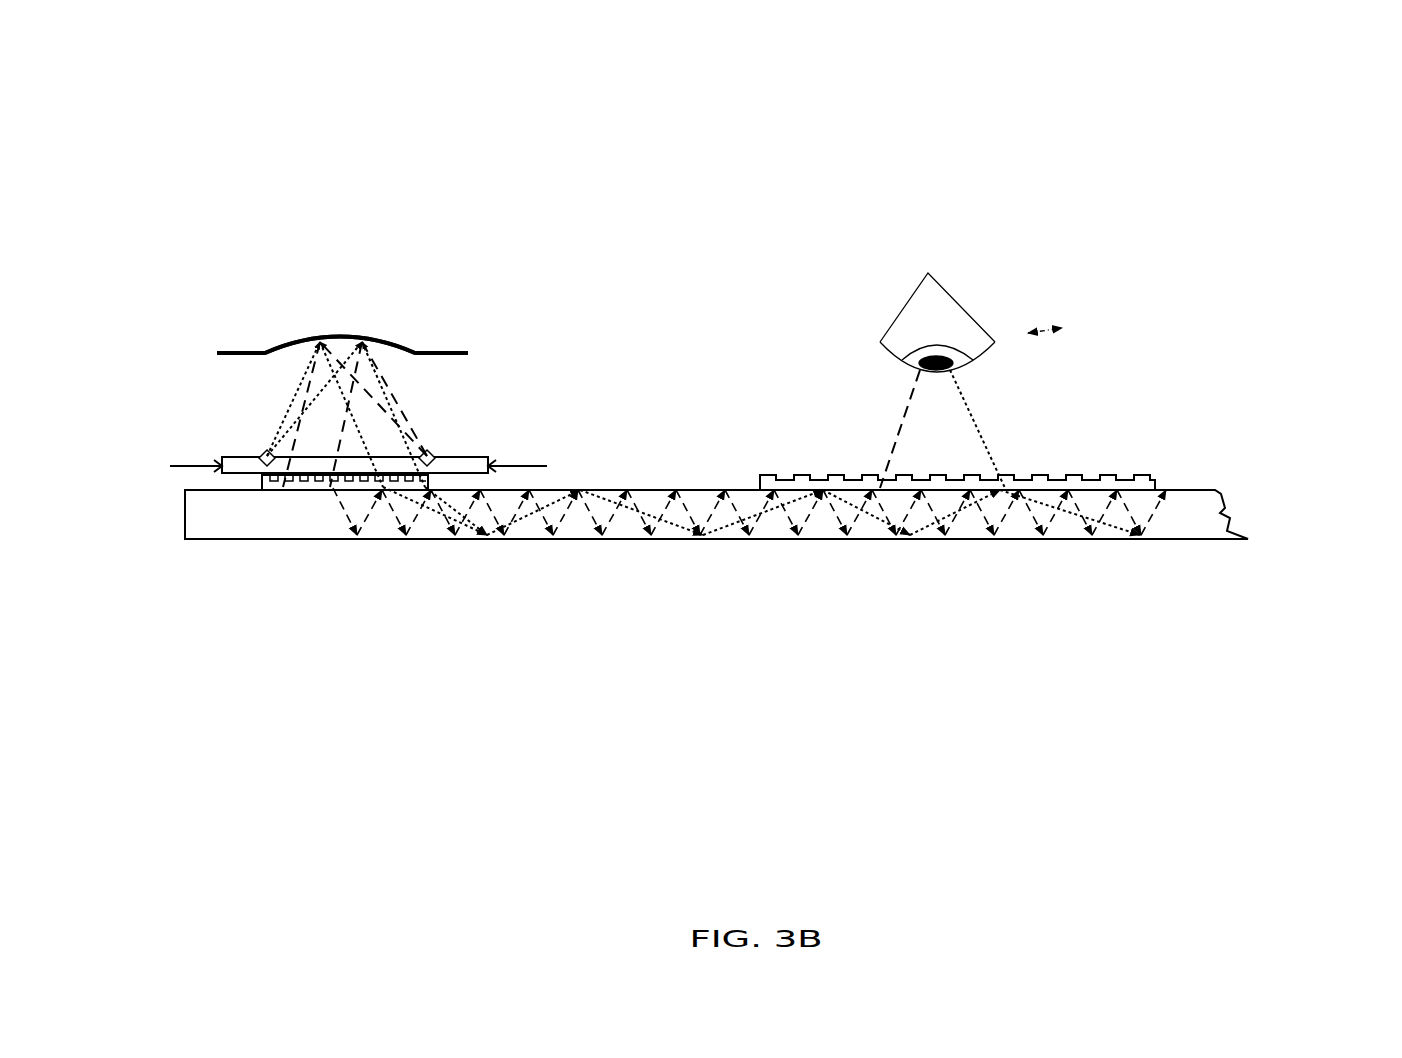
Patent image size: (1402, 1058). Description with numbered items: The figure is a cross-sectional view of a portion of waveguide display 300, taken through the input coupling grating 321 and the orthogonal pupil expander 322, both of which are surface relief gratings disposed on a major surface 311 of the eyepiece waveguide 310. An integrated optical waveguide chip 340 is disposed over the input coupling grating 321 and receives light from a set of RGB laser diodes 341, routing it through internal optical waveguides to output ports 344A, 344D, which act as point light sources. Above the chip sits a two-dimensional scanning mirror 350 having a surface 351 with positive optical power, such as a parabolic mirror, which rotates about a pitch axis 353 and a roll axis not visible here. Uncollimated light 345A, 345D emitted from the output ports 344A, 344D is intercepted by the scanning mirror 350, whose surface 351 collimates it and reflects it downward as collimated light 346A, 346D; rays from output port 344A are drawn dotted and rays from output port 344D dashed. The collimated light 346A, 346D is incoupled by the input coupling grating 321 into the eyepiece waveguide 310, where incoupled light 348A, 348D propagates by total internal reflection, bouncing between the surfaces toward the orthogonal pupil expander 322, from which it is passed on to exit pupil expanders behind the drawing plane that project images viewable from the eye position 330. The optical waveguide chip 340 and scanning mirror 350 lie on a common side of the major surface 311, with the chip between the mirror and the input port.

The waveguide display 300 is at (1273, 73).
The eyepiece waveguide 310 is at (1232, 518).
The major surface 311 is at (1193, 485).
The input coupling grating 321 is at (263, 488).
The orthogonal pupil expander 322 is at (1097, 472).
The eye position 330 is at (953, 307).
The integrated optical waveguide chip 340 is at (248, 468).
The RGB laser diodes 341 is at (173, 463).
The output port 344A is at (264, 452).
The output port 344D is at (434, 454).
The light emitted from output port 344A 345A is at (285, 408).
The light emitted from output port 344D 345D is at (403, 407).
The collimated light 346A is at (320, 427).
The collimated light 346D is at (378, 430).
The incoupled light 348A is at (440, 505).
The incoupled light 348D is at (347, 505).
The scanning mirror 350 is at (472, 287).
The surface with positive optical power 351 is at (345, 335).
The pitch axis 353 is at (233, 350).